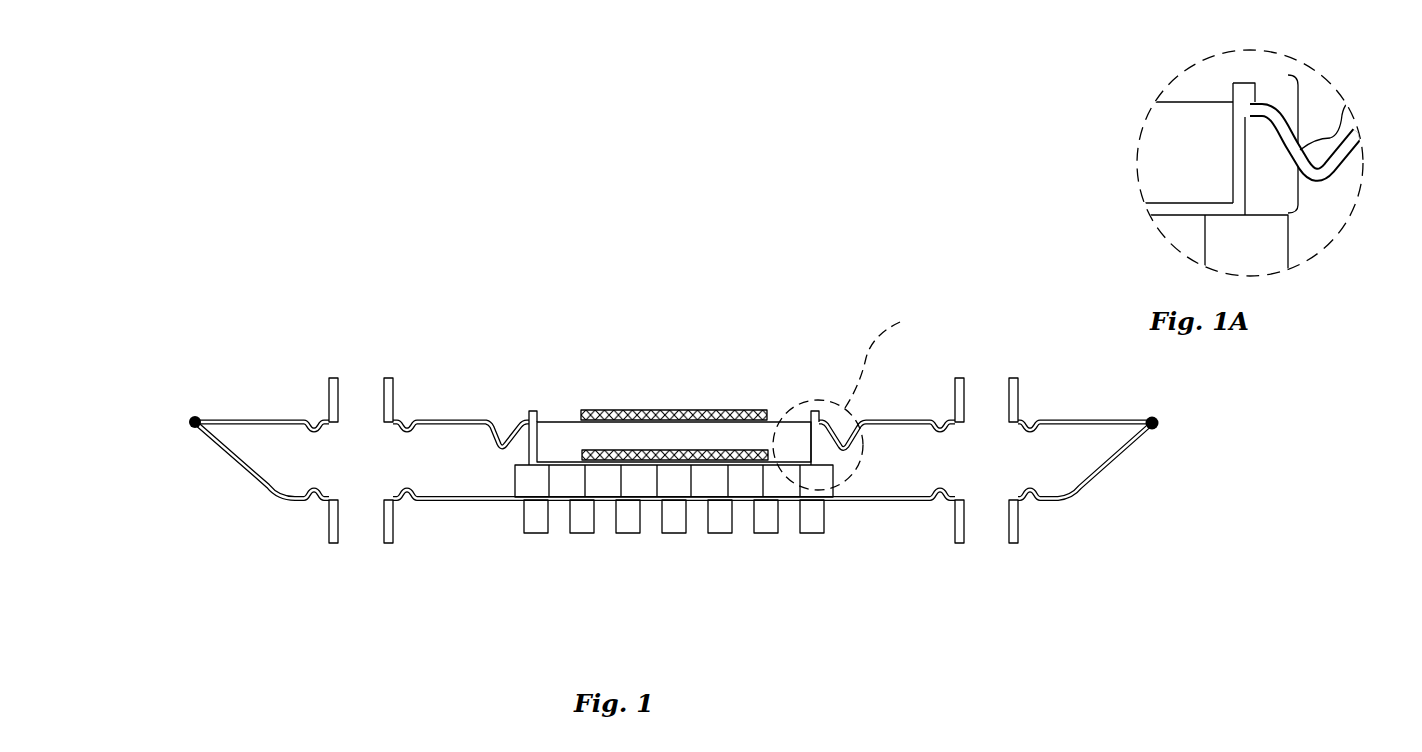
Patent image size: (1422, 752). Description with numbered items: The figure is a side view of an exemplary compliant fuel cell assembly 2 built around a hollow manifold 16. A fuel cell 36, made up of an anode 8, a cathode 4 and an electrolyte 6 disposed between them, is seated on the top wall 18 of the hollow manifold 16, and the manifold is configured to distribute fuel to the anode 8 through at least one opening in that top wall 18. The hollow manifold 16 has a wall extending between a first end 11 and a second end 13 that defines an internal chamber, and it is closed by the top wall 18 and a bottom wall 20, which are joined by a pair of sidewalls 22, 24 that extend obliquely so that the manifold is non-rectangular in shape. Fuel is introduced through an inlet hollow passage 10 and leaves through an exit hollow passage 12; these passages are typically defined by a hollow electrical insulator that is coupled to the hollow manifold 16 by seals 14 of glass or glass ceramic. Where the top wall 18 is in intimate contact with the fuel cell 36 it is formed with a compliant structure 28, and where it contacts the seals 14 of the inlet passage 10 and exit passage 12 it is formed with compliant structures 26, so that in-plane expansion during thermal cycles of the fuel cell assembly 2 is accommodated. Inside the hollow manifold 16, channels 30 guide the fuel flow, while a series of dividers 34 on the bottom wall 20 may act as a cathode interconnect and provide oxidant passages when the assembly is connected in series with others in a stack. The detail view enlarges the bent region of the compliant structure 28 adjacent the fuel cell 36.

In FIG. 1, the fuel cell assembly 2 is at (280, 270).
In FIG. 1, the cathode 4 is at (650, 408).
In FIG. 1, the electrolyte 6 is at (774, 433).
In FIG. 1, the anode 8 is at (687, 453).
In FIG. 1, the inlet hollow passage 10 is at (367, 413).
In FIG. 1, the first end 11 is at (190, 424).
In FIG. 1, the exit hollow passage 12 is at (982, 397).
In FIG. 1, the second end 13 is at (1158, 422).
In FIG. 1, the seals 14 is at (328, 392).
In FIG. 1, the hollow manifold 16 is at (480, 477).
In FIG. 1, the top wall 18 is at (437, 420).
In FIG. 1, the bottom wall 20 is at (500, 498).
In FIG. 1, the sidewall 22 is at (233, 455).
In FIG. 1, the sidewall 24 is at (1110, 465).
In FIG. 1, the compliant structure 26 is at (410, 422).
In FIG. 1, the compliant structure 28 is at (512, 428).
In FIG. 1, the channels 30 is at (833, 490).
In FIG. 1, the dividers 34 is at (728, 523).
In FIG. 1A, the fuel cell 36 is at (1355, 100).